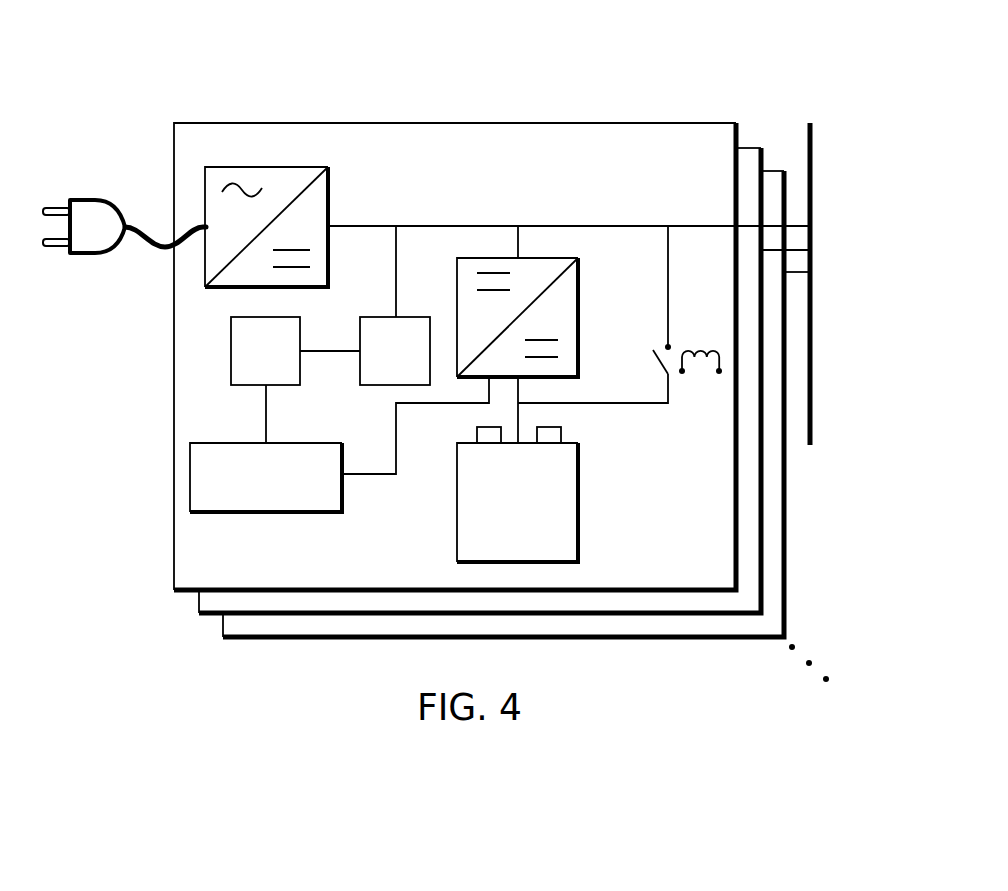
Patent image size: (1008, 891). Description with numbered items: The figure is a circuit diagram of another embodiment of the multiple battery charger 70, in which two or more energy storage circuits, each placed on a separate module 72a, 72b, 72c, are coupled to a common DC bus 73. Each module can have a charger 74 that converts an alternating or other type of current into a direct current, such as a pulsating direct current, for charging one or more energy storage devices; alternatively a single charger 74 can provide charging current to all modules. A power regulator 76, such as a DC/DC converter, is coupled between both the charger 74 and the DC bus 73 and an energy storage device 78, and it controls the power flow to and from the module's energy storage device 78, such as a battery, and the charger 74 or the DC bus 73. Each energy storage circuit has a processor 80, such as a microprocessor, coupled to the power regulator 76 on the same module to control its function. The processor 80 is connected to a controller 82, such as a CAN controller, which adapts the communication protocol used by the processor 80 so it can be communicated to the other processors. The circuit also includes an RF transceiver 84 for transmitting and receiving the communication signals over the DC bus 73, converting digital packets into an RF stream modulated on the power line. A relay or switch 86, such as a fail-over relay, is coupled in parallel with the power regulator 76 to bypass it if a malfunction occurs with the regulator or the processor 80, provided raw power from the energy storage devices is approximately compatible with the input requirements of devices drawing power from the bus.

The multiple battery charger 70 is at (584, 64).
The module 72a is at (174, 583).
The module 72b is at (199, 608).
The module 72c is at (223, 632).
The DC bus 73 is at (812, 164).
The charger 74 is at (329, 199).
The power regulator 76 is at (579, 312).
The energy storage device 78 is at (579, 503).
The processor 80 is at (265, 513).
The controller 82 is at (231, 358).
The RF transceiver 84 is at (414, 317).
The relay or switch 86 is at (655, 360).